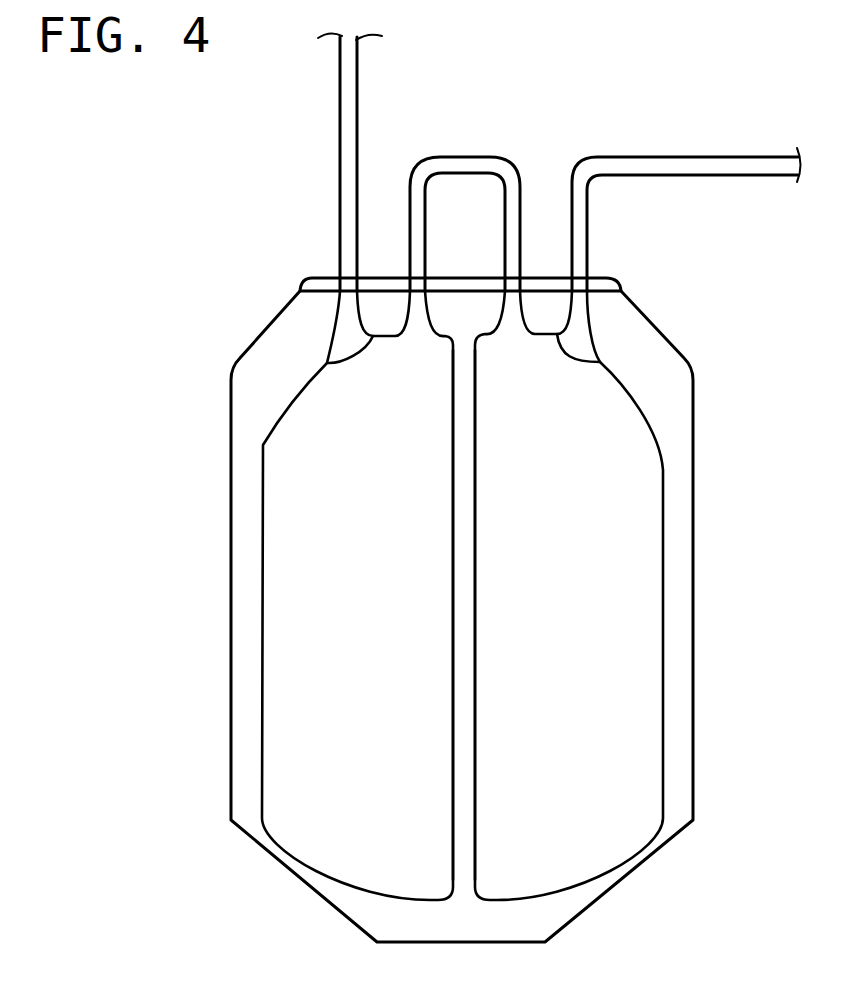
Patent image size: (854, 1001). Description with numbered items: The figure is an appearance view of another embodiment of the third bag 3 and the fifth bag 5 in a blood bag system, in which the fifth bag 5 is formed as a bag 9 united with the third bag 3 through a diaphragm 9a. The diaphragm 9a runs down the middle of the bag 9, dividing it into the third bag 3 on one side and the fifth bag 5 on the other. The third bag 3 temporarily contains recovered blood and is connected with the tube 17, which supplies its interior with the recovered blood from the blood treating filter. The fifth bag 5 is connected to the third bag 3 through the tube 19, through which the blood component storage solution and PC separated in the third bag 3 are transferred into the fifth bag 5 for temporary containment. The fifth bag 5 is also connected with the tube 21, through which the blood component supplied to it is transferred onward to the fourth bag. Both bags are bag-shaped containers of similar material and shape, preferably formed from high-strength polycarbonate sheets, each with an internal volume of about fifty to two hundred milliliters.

The bag 9 is at (200, 275).
The diaphragm 9a is at (463, 547).
The fifth bag 5 is at (305, 605).
The third bag 3 is at (610, 607).
The tube 21 is at (340, 130).
The tube 19 is at (467, 157).
The tube 17 is at (695, 157).